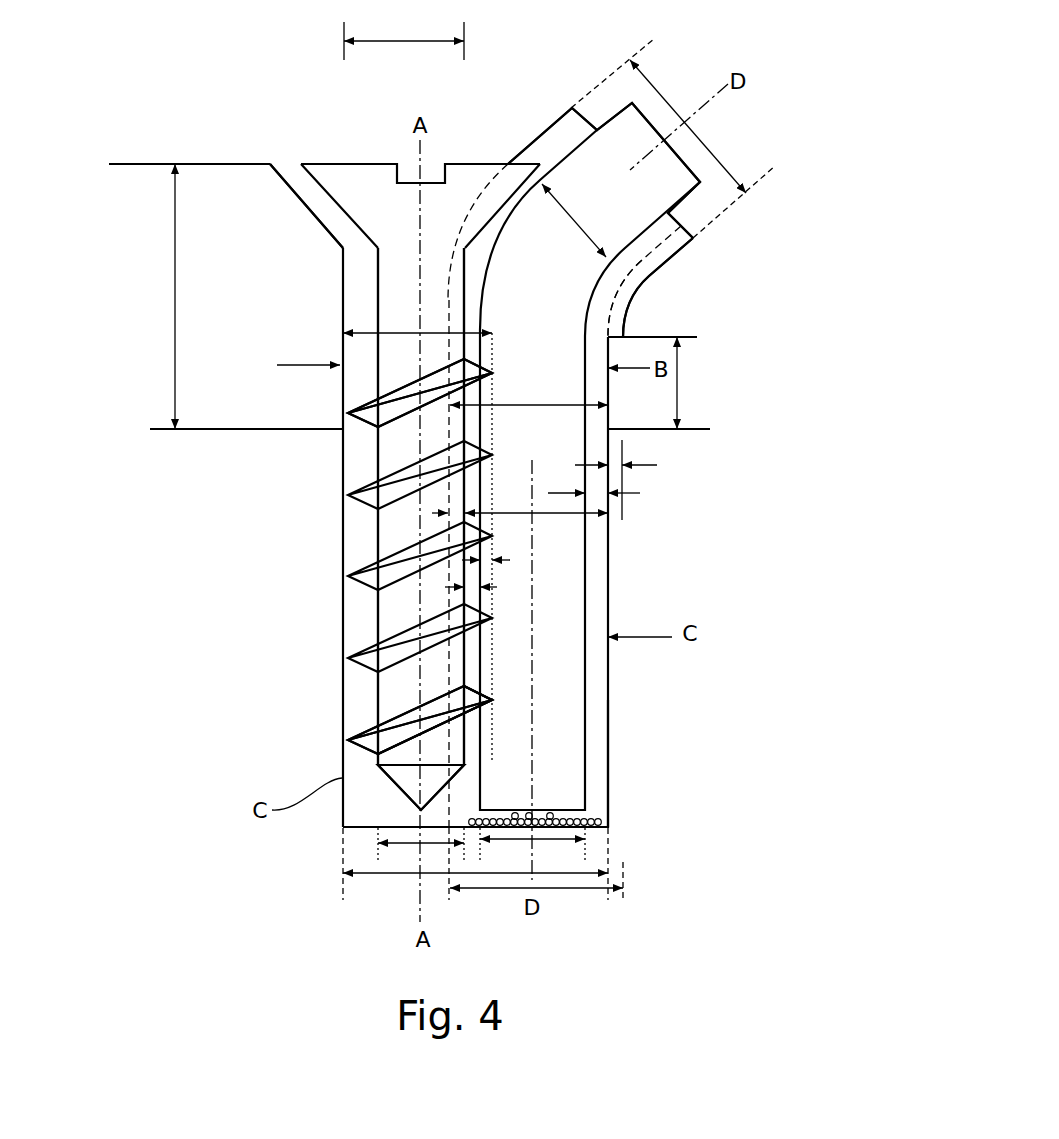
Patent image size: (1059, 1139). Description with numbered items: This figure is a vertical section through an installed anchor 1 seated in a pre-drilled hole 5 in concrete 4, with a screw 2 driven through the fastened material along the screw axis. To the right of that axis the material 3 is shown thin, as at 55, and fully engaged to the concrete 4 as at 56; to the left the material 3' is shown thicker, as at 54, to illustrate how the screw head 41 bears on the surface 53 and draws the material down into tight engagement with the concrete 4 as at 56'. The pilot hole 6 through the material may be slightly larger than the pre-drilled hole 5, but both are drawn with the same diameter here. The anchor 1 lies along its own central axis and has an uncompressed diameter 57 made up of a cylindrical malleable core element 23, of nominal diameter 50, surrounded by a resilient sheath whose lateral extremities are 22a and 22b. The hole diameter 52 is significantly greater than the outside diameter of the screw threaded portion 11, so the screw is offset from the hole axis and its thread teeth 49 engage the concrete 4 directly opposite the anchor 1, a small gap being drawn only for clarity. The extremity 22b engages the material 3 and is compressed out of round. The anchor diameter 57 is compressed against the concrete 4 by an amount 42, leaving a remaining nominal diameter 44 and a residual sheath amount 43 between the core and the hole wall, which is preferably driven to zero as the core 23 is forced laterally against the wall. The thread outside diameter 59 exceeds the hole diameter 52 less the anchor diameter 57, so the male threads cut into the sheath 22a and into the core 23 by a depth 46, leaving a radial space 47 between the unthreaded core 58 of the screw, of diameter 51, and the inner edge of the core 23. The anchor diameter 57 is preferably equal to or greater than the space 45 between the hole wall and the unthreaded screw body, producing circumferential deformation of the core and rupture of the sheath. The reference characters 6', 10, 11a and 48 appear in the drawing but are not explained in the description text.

The anchor 1 is at (620, 93).
The screw 2 is at (373, 163).
The material 3 is at (564, 543).
The material 3' is at (189, 139).
The concrete 4 is at (305, 513).
The pre-drilled hole 5 is at (608, 787).
The pilot hole 6 is at (585, 404).
The conveying direction 6' is at (297, 363).
The outer wall 10 is at (340, 298).
The screw threaded portion 11 is at (355, 610).
The screw blade tip 11a is at (488, 696).
The lateral extremity of sheath 22a is at (532, 138).
The lateral extremity of sheath 22b is at (680, 257).
The malleable core element 23 is at (603, 122).
The screw head 41 is at (317, 163).
The compression amount 42 is at (655, 466).
The residual sheath amount 43 is at (640, 494).
The remaining nominal diameter 44 is at (527, 403).
The space 45 is at (547, 514).
The thread cutting depth 46 is at (502, 562).
The radial space 47 is at (497, 588).
The screw shaft 48 is at (355, 537).
The thread teeth 49 is at (352, 420).
The nominal diameter of core 50 is at (477, 439).
The unthreaded core diameter 51 is at (421, 847).
The hole diameter 52 is at (403, 873).
The surface 53 is at (280, 180).
The material thickness 54 is at (159, 296).
The material thickness 55 is at (677, 353).
The engagement 56 is at (687, 464).
The engagement 56' is at (246, 390).
The anchor diameter 57 is at (612, 475).
The unthreaded core of screw 58 is at (466, 737).
The thread outside diameter 59 is at (417, 534).